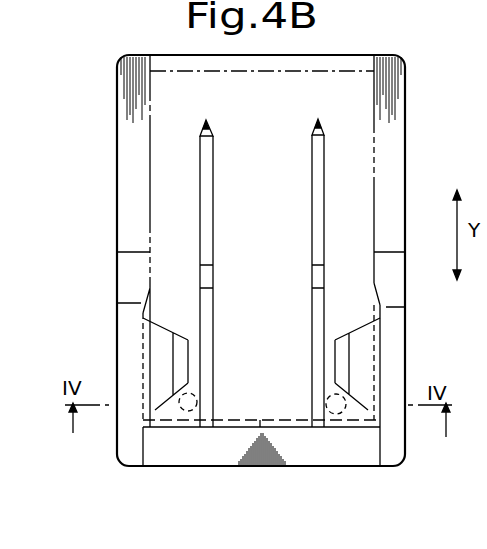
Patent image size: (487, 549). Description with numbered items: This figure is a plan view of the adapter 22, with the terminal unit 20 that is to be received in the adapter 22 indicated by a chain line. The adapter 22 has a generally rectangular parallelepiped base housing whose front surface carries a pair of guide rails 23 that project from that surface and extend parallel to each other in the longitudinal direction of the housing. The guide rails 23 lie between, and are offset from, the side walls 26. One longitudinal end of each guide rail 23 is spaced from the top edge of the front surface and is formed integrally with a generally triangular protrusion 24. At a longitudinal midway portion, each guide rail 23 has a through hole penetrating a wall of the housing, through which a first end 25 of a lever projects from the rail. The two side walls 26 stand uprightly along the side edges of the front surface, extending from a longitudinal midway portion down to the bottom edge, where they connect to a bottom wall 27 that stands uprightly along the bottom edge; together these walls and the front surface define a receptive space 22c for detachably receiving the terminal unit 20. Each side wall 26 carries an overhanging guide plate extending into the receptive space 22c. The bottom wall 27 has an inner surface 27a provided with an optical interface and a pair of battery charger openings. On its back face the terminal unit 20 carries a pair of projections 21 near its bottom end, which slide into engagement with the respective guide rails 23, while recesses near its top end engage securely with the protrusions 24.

The terminal unit 20 is at (375, 179).
The projections 21 is at (165, 437).
The adapter 22 is at (118, 139).
The receptive space 22c is at (281, 320).
The guide rails 23 is at (200, 215).
The protrusion 24 is at (203, 131).
The first end of lever 25 is at (200, 278).
The side walls 26 is at (130, 348).
The bottom wall 27 is at (293, 440).
The inner surface of bottom wall 27a is at (247, 427).